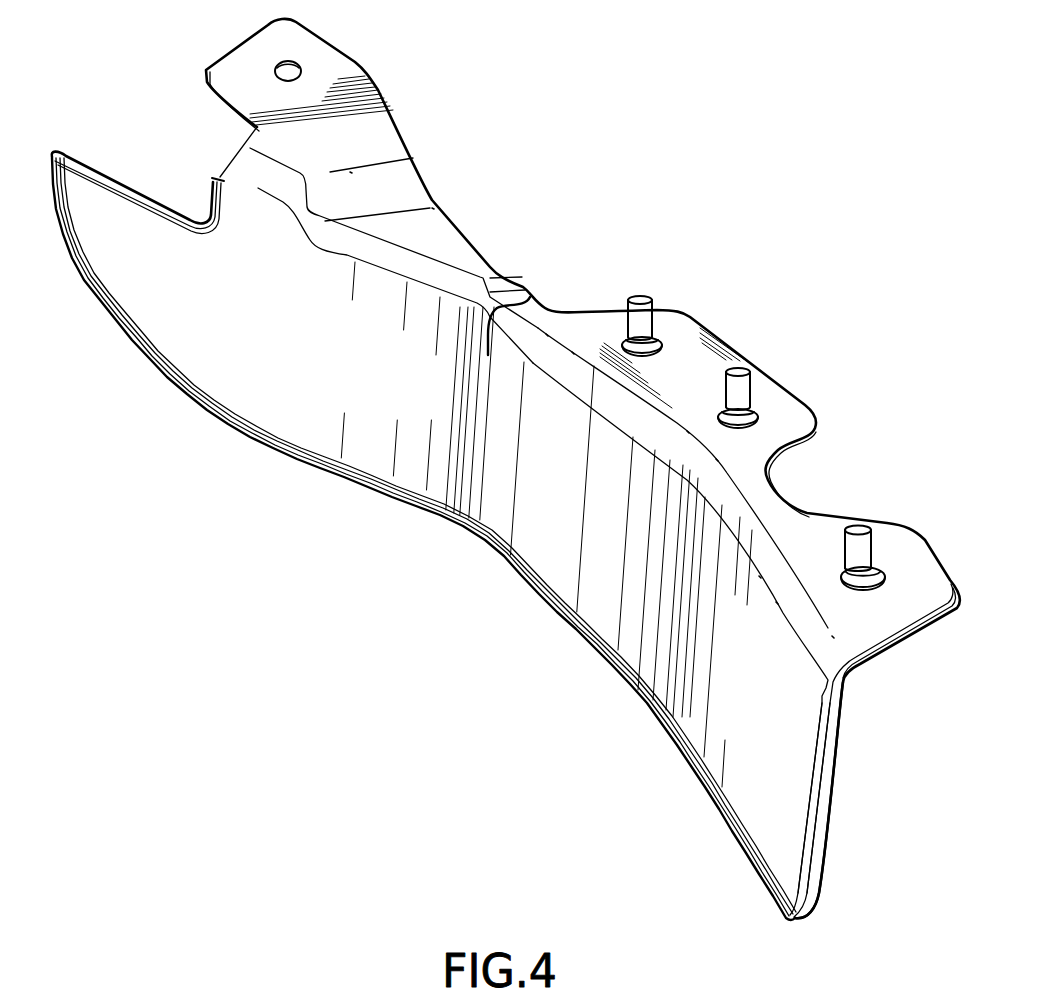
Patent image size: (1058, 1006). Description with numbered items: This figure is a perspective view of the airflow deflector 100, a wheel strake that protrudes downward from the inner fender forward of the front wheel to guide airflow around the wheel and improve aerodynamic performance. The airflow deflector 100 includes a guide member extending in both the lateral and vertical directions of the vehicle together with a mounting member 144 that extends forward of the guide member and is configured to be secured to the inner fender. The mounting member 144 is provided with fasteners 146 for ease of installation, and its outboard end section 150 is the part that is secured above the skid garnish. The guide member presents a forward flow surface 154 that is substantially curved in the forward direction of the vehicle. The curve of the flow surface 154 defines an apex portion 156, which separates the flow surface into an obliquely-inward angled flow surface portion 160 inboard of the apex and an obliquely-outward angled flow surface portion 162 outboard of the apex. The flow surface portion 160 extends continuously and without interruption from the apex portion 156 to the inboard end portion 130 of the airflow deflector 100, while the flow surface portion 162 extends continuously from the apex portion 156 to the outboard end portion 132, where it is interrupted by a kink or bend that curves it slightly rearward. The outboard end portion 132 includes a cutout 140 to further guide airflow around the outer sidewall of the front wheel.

The airflow deflector 100 is at (310, 673).
The inboard end portion 130 is at (775, 838).
The outboard end portion 132 is at (133, 288).
The cutout 140 is at (122, 182).
The mounting member 144 is at (677, 327).
The fasteners 146 is at (738, 390).
The outboard end section 150 is at (372, 127).
The forward flow surface 154 is at (836, 774).
The apex portion 156 is at (532, 292).
The obliquely-inward angled flow surface portion 160 is at (727, 693).
The obliquely-outward angled flow surface portion 162 is at (220, 317).